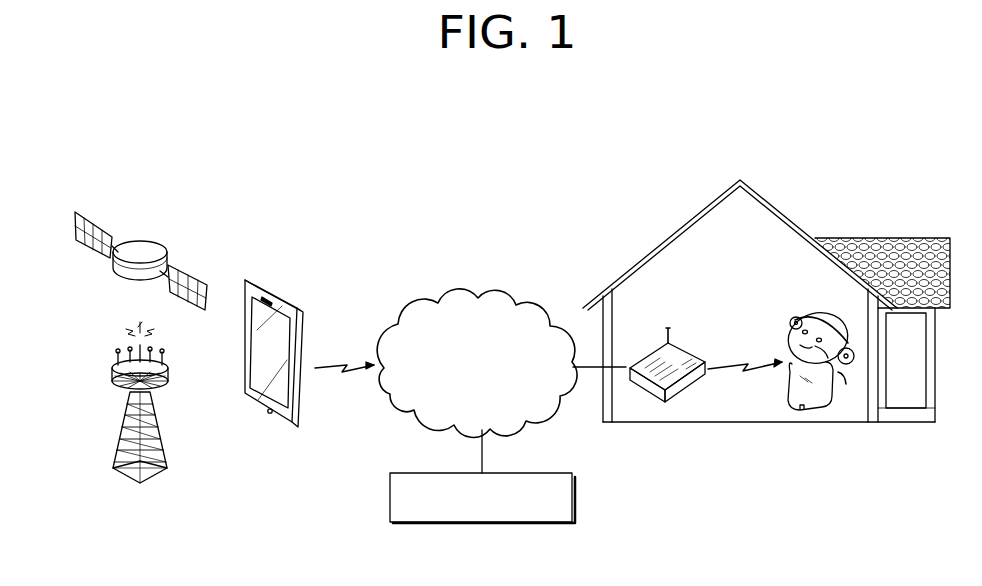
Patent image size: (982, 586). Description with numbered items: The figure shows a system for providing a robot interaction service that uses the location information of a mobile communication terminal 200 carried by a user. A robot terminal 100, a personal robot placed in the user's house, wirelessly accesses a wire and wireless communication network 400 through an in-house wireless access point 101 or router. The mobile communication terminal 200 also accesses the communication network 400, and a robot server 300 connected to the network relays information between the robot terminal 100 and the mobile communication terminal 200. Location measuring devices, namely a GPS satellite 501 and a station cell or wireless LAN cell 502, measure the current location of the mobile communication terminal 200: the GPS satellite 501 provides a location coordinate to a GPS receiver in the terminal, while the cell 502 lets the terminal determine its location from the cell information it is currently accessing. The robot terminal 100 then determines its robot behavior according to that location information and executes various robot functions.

The robot terminal 100 is at (810, 313).
The in-house wireless access point 101 is at (688, 323).
The mobile communication terminal 200 is at (276, 293).
The robot server 300 is at (423, 473).
The communication network 400 is at (442, 307).
The GPS satellite 501 is at (152, 245).
The station cell or wireless LAN cell 502 is at (113, 381).